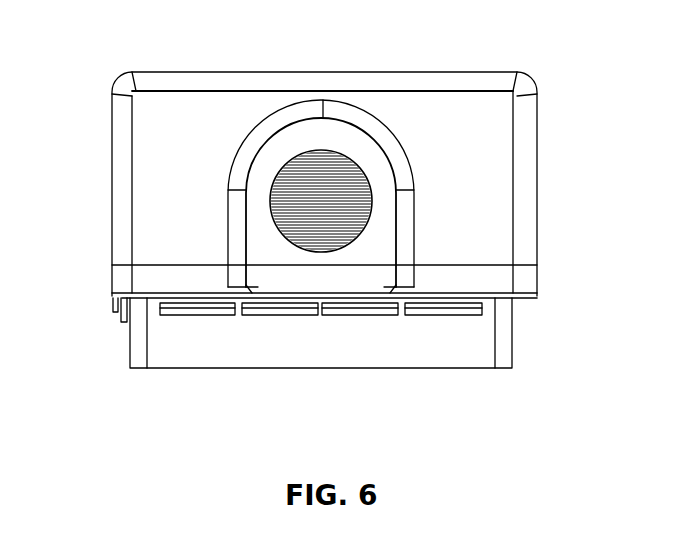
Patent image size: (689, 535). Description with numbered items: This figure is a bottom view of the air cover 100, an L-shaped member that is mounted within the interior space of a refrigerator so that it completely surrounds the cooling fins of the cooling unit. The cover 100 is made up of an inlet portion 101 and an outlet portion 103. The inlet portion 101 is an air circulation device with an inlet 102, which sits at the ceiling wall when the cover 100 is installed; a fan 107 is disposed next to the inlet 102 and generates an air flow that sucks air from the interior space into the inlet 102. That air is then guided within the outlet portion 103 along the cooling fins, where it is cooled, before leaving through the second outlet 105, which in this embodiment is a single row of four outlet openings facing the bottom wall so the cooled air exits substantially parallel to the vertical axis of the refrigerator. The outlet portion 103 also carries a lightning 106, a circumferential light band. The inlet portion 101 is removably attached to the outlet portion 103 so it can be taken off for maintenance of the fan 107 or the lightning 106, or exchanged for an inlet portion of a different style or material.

The cover 100 is at (84, 99).
The inlet portion 101 is at (290, 137).
The inlet 102 is at (336, 150).
The outlet portion 103 is at (172, 115).
The second outlet 105 is at (190, 310).
The lightning 106 is at (389, 140).
The fan 107 is at (362, 222).